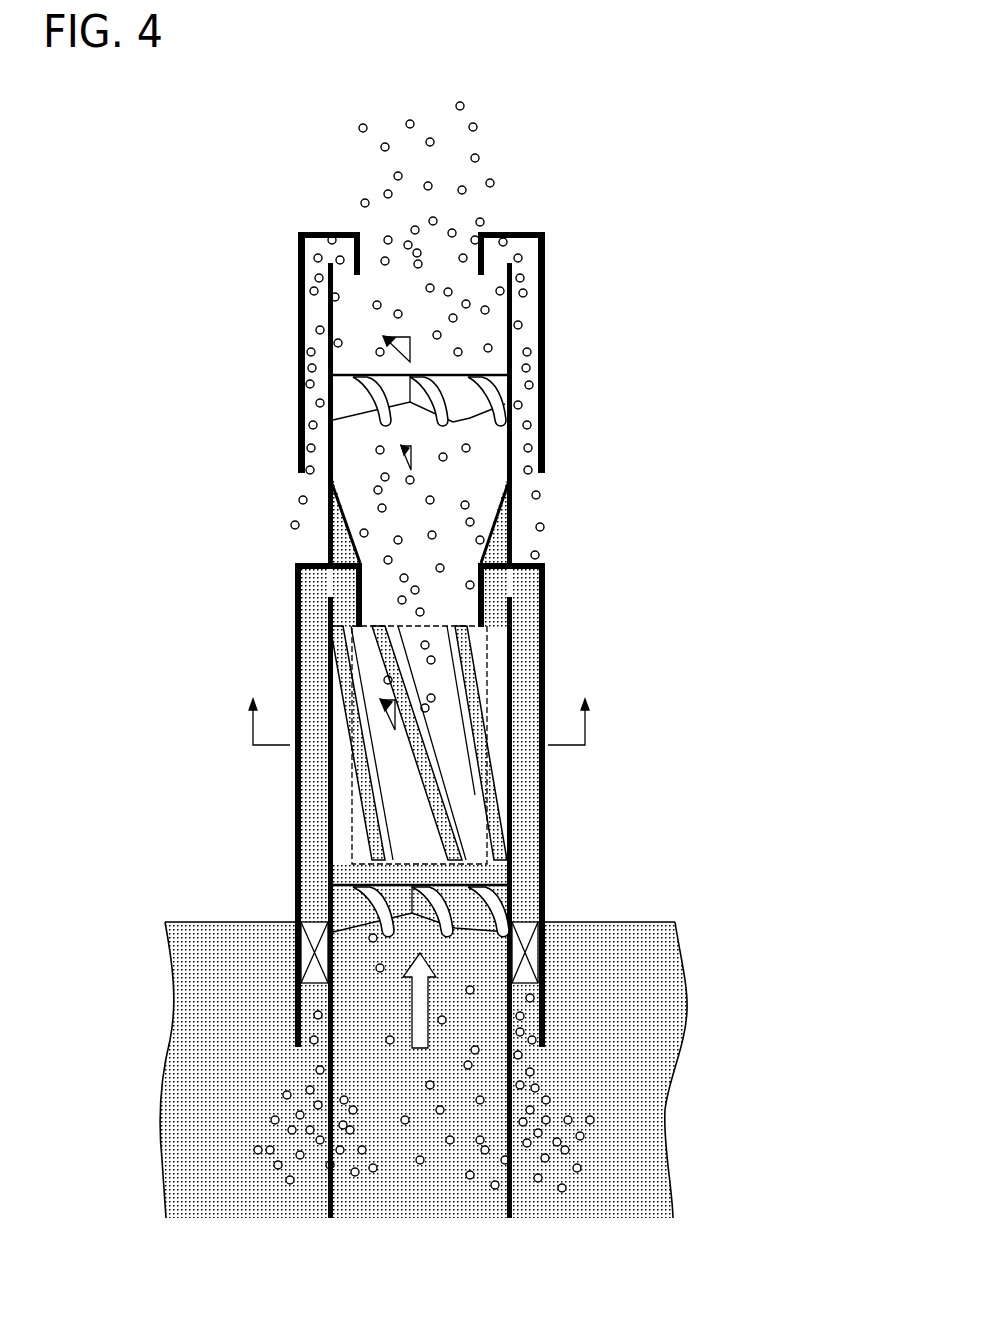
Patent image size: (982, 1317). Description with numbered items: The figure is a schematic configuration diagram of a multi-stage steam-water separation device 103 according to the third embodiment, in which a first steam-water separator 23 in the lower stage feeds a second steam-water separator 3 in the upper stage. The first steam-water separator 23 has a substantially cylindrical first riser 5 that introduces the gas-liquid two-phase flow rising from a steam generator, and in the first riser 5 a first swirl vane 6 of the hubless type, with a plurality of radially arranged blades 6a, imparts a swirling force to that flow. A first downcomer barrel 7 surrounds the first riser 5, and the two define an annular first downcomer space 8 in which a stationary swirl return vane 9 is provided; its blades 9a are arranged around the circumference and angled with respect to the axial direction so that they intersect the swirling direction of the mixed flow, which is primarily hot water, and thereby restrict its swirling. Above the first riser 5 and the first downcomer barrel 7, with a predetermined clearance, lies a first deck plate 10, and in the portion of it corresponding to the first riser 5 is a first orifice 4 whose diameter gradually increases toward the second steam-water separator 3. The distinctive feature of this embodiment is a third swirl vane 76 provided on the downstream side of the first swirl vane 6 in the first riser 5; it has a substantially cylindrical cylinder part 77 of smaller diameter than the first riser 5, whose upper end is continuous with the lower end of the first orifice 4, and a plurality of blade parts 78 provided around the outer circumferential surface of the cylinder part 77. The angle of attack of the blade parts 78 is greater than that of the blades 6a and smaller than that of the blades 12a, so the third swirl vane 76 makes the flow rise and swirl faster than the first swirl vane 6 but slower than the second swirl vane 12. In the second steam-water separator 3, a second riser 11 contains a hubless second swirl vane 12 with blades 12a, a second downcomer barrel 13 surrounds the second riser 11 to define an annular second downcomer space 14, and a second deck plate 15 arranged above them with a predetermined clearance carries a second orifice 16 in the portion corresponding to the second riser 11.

The multi-stage steam-water separation device 103 is at (632, 240).
The second steam-water separator 3 is at (552, 384).
The first orifice 4 is at (487, 550).
The first riser 5 is at (331, 637).
The first swirl vane 6 is at (341, 900).
The blades 6a is at (443, 912).
The first downcomer barrel 7 is at (298, 652).
The first downcomer space 8 is at (310, 773).
The swirl return vane 9 is at (305, 952).
The blades 9a is at (527, 925).
The first deck plate 10 is at (312, 562).
The second riser 11 is at (328, 442).
The second swirl vane 12 is at (345, 395).
The blades 12a is at (513, 362).
The second downcomer barrel 13 is at (543, 447).
The second downcomer space 14 is at (312, 310).
The second deck plate 15 is at (330, 232).
The second orifice 16 is at (481, 253).
The first steam-water separator 23 is at (606, 797).
The third swirl vane 76 is at (496, 737).
The cylinder part 77 is at (488, 641).
The blade parts 78 is at (373, 827).